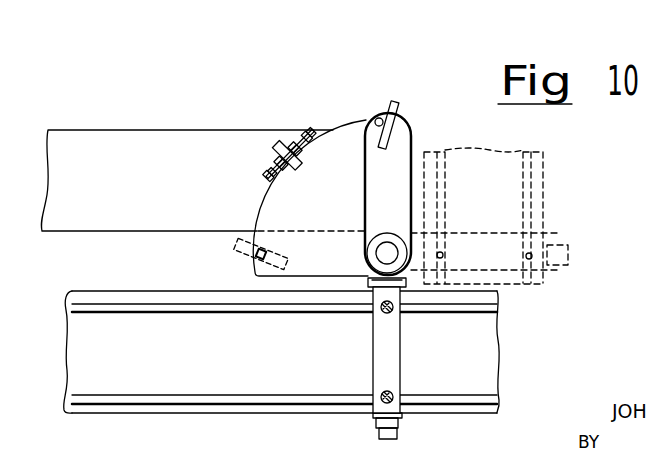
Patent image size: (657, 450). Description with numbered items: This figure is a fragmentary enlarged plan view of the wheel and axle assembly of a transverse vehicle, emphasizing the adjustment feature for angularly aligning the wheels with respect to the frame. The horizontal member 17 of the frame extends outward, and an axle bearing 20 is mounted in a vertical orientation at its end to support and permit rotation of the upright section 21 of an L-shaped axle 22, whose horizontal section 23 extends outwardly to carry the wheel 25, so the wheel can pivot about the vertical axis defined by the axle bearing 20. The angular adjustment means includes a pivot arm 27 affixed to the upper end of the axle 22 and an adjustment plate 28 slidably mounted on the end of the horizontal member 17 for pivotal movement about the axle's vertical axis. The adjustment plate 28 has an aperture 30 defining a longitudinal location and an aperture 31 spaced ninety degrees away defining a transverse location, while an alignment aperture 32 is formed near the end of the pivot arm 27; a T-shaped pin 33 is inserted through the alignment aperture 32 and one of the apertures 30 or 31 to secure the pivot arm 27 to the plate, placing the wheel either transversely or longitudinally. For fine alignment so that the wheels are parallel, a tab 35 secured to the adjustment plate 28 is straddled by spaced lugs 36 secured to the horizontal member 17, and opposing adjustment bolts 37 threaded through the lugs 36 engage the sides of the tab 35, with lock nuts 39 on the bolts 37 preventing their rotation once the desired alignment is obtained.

The horizontal member 17 is at (187, 158).
The axle bearing 20 is at (366, 268).
The upright section 21 is at (393, 255).
The L-shaped axle 22 is at (385, 358).
The horizontal section 23 is at (400, 342).
The wheel 25 is at (496, 373).
The pivot arm 27 is at (412, 140).
The adjustment plate 28 is at (341, 131).
The aperture 30 is at (407, 115).
The aperture 31 is at (250, 271).
The alignment aperture 32 is at (376, 117).
The T-shaped pin 33 is at (394, 102).
The tab 35 is at (283, 150).
The lug 36 is at (295, 133).
The adjustment bolt 37 is at (306, 136).
The lock nut 39 is at (272, 167).